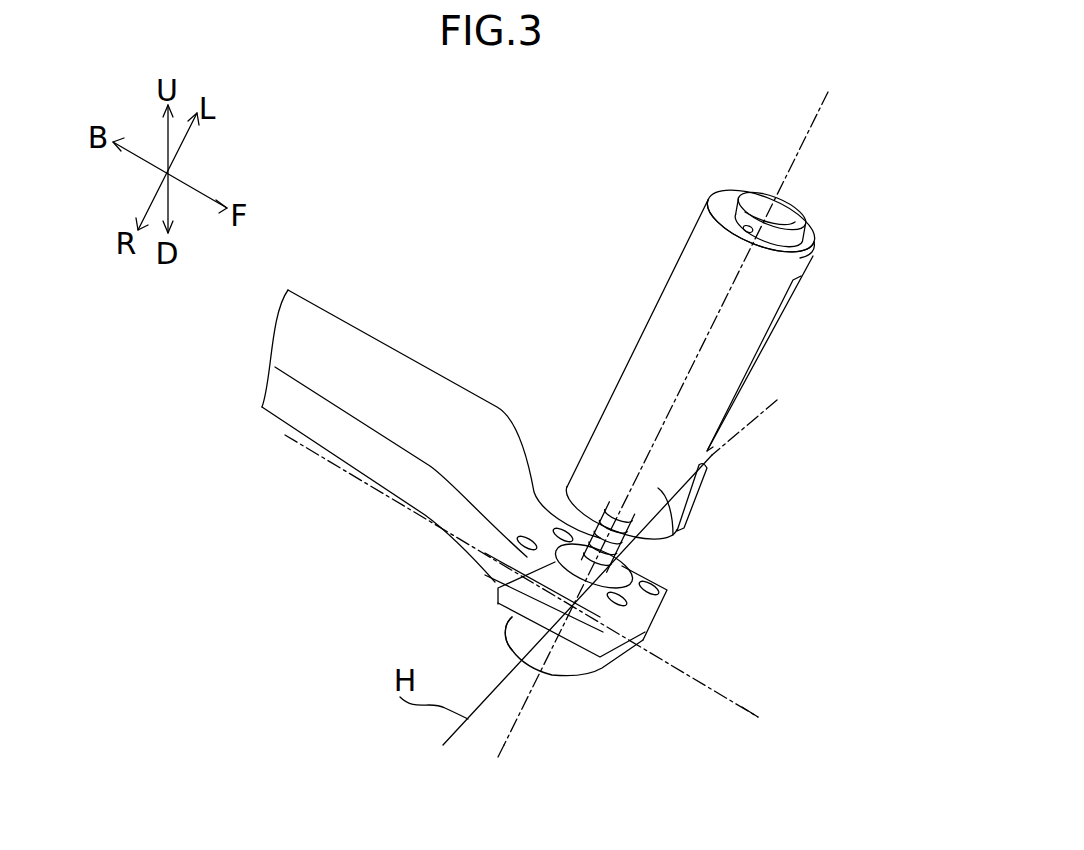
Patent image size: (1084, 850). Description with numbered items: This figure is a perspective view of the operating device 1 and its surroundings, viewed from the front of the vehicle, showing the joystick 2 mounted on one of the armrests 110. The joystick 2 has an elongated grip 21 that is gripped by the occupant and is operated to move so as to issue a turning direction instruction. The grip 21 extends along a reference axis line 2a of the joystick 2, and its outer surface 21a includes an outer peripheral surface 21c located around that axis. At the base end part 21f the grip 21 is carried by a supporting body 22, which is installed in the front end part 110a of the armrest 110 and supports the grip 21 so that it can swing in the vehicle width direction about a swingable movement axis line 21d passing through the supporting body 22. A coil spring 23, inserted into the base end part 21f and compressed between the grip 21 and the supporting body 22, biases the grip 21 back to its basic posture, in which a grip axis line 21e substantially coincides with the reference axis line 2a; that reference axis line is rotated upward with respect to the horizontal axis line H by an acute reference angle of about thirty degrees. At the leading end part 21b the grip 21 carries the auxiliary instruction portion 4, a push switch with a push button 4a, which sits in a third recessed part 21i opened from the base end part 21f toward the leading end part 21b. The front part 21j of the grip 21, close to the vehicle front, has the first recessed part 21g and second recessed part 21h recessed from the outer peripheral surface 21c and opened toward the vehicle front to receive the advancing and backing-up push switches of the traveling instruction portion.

The operating device 1 is at (838, 228).
The joystick 2 is at (682, 238).
The reference axis line 2a is at (520, 718).
The auxiliary instruction portion 4 is at (770, 191).
The push button 4a is at (780, 217).
The grip 21 is at (660, 318).
The outer surface 21a is at (687, 243).
The leading end part 21b is at (803, 248).
The outer peripheral surface 21c is at (678, 535).
The swingable movement axis line 21d is at (358, 477).
The grip axis line 21e is at (511, 733).
The base end part 21f is at (640, 565).
The first recessed part 21g is at (771, 400).
The second recessed part 21h is at (690, 494).
The third recessed part 21i is at (743, 230).
The front part 21j is at (764, 360).
The supporting body 22 is at (633, 623).
The coil spring 23 is at (497, 592).
The armrest 110 is at (382, 373).
The front end part 110a is at (518, 508).